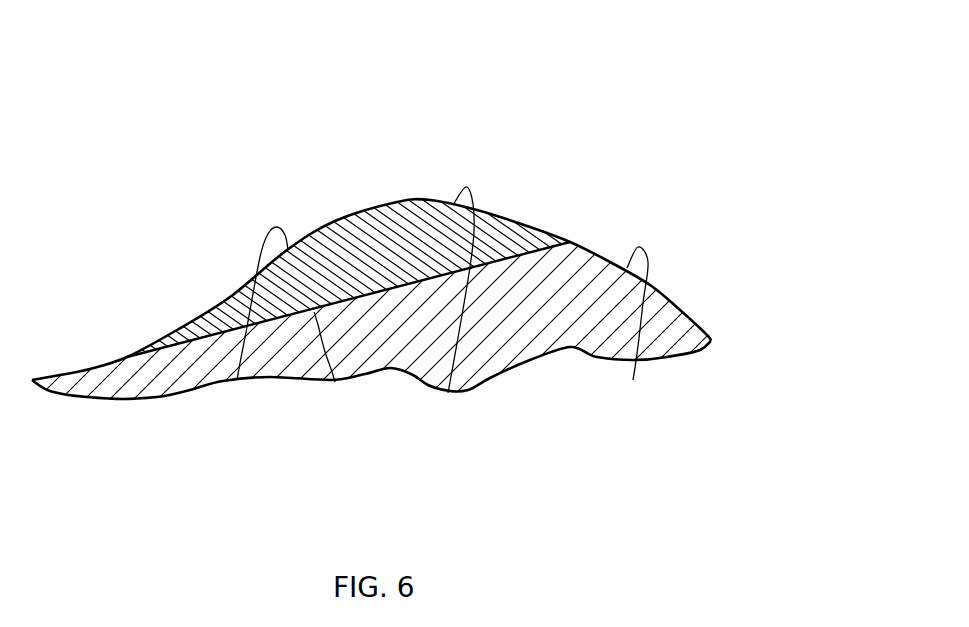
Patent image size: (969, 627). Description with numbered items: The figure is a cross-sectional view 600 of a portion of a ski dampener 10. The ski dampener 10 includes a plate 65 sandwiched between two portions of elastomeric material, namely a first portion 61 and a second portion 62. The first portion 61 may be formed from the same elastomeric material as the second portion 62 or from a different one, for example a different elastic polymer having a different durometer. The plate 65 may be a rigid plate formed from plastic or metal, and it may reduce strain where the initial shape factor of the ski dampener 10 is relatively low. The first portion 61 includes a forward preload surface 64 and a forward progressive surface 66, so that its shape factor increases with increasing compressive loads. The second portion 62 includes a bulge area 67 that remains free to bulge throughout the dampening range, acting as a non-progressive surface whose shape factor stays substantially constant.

The cross-sectional view 600 is at (468, 313).
The ski dampener 10 is at (135, 376).
The first portion 61 is at (350, 313).
The second portion 62 is at (468, 300).
The forward preload surface 64 is at (237, 380).
The plate 65 is at (335, 382).
The forward progressive surface 66 is at (448, 393).
The bulge area 67 is at (633, 380).